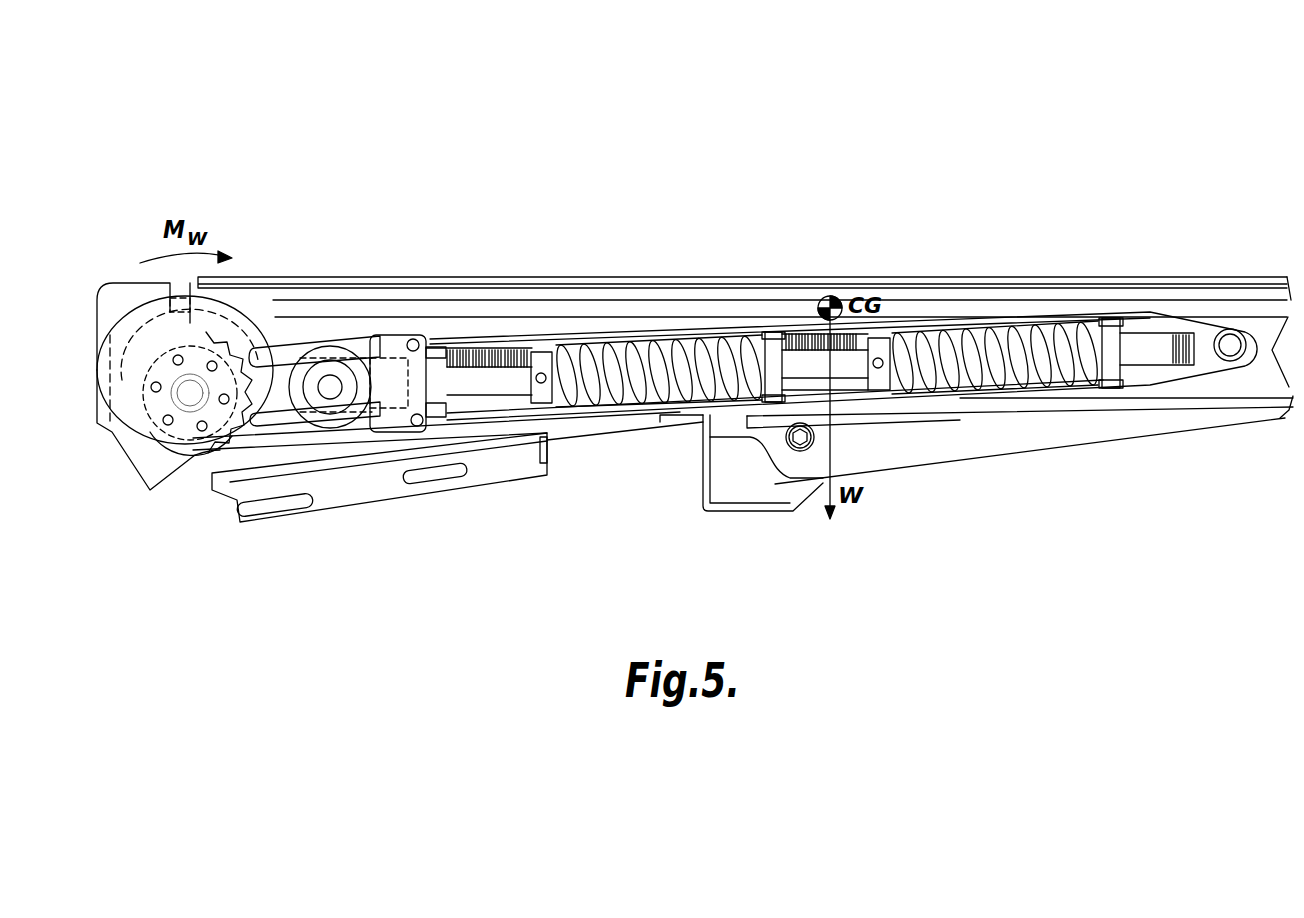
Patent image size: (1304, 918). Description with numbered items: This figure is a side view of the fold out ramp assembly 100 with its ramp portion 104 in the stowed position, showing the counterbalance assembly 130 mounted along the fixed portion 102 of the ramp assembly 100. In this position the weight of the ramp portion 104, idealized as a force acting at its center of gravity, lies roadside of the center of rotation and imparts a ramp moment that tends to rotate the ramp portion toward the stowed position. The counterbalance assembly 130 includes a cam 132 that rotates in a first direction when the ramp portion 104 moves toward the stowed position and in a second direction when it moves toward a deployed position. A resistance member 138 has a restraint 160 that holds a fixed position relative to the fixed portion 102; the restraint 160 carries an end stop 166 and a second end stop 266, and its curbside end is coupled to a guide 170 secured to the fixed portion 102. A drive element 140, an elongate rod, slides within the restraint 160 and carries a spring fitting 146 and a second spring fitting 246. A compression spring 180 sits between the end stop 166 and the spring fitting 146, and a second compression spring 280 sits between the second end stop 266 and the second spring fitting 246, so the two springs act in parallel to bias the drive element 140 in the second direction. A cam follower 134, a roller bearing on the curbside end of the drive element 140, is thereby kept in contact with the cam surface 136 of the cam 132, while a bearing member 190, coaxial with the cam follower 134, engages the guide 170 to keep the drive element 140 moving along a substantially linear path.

The ramp assembly 100 is at (773, 128).
The fixed portion 102 is at (1080, 423).
The ramp portion 104 is at (307, 277).
The counterbalance assembly 130 is at (575, 472).
The cam 132 is at (97, 383).
The cam follower 134 is at (302, 450).
The cam surface 136 is at (195, 430).
The resistance member 138 is at (668, 452).
The drive element 140 is at (486, 392).
The spring fitting 146 is at (535, 352).
The restraint 160 is at (858, 402).
The end stop 166 is at (770, 333).
The guide 170 is at (388, 335).
The compression spring 180 is at (647, 345).
The bearing member 190 is at (350, 397).
The second spring fitting 246 is at (879, 339).
The second end stop 266 is at (1110, 318).
The second compression spring 280 is at (985, 387).